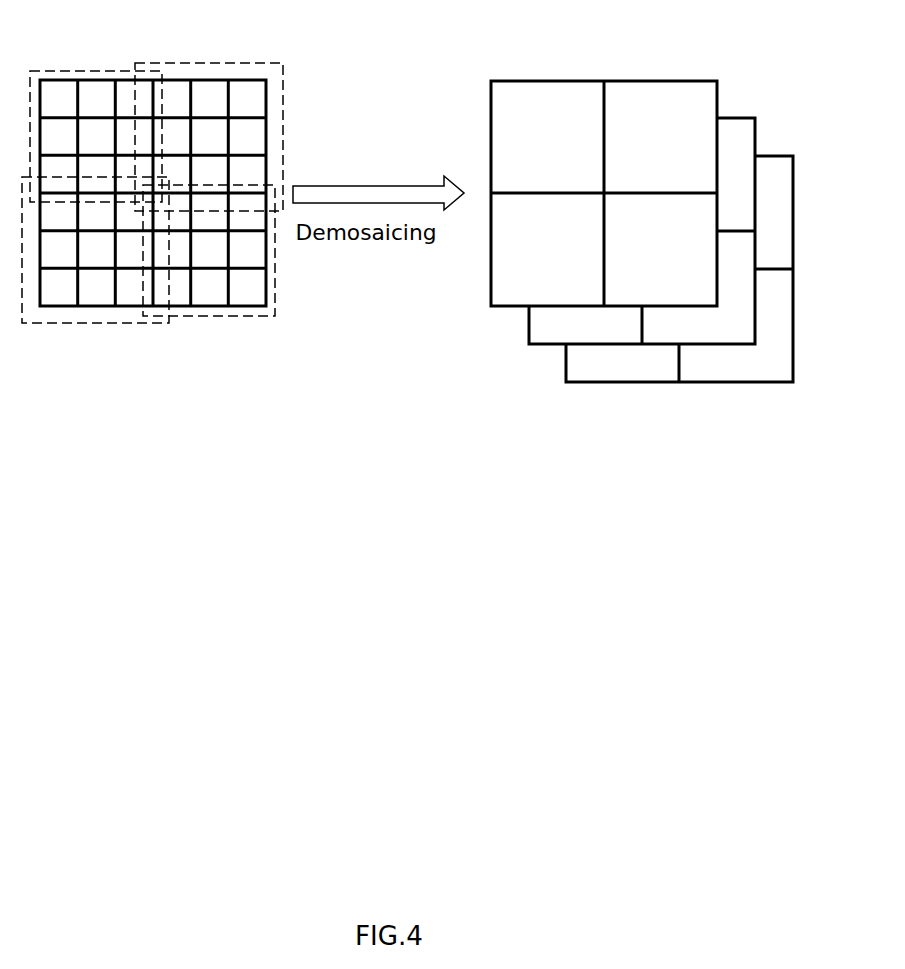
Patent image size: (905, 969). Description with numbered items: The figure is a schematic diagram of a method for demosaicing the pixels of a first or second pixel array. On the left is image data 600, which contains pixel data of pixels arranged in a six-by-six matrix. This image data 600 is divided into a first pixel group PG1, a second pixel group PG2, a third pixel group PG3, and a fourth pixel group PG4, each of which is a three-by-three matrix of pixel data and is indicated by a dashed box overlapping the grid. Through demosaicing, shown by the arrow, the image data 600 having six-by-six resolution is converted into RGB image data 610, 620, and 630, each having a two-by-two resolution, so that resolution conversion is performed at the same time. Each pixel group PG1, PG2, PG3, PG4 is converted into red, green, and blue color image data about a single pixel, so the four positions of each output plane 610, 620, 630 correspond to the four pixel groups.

The image data 600 is at (150, 307).
The first pixel group PG1 is at (95, 70).
The second pixel group PG2 is at (208, 62).
The third pixel group PG3 is at (94, 323).
The fourth pixel group PG4 is at (208, 316).
The RGB image data 610 is at (698, 80).
The RGB image data 620 is at (736, 117).
The RGB image data 630 is at (774, 155).